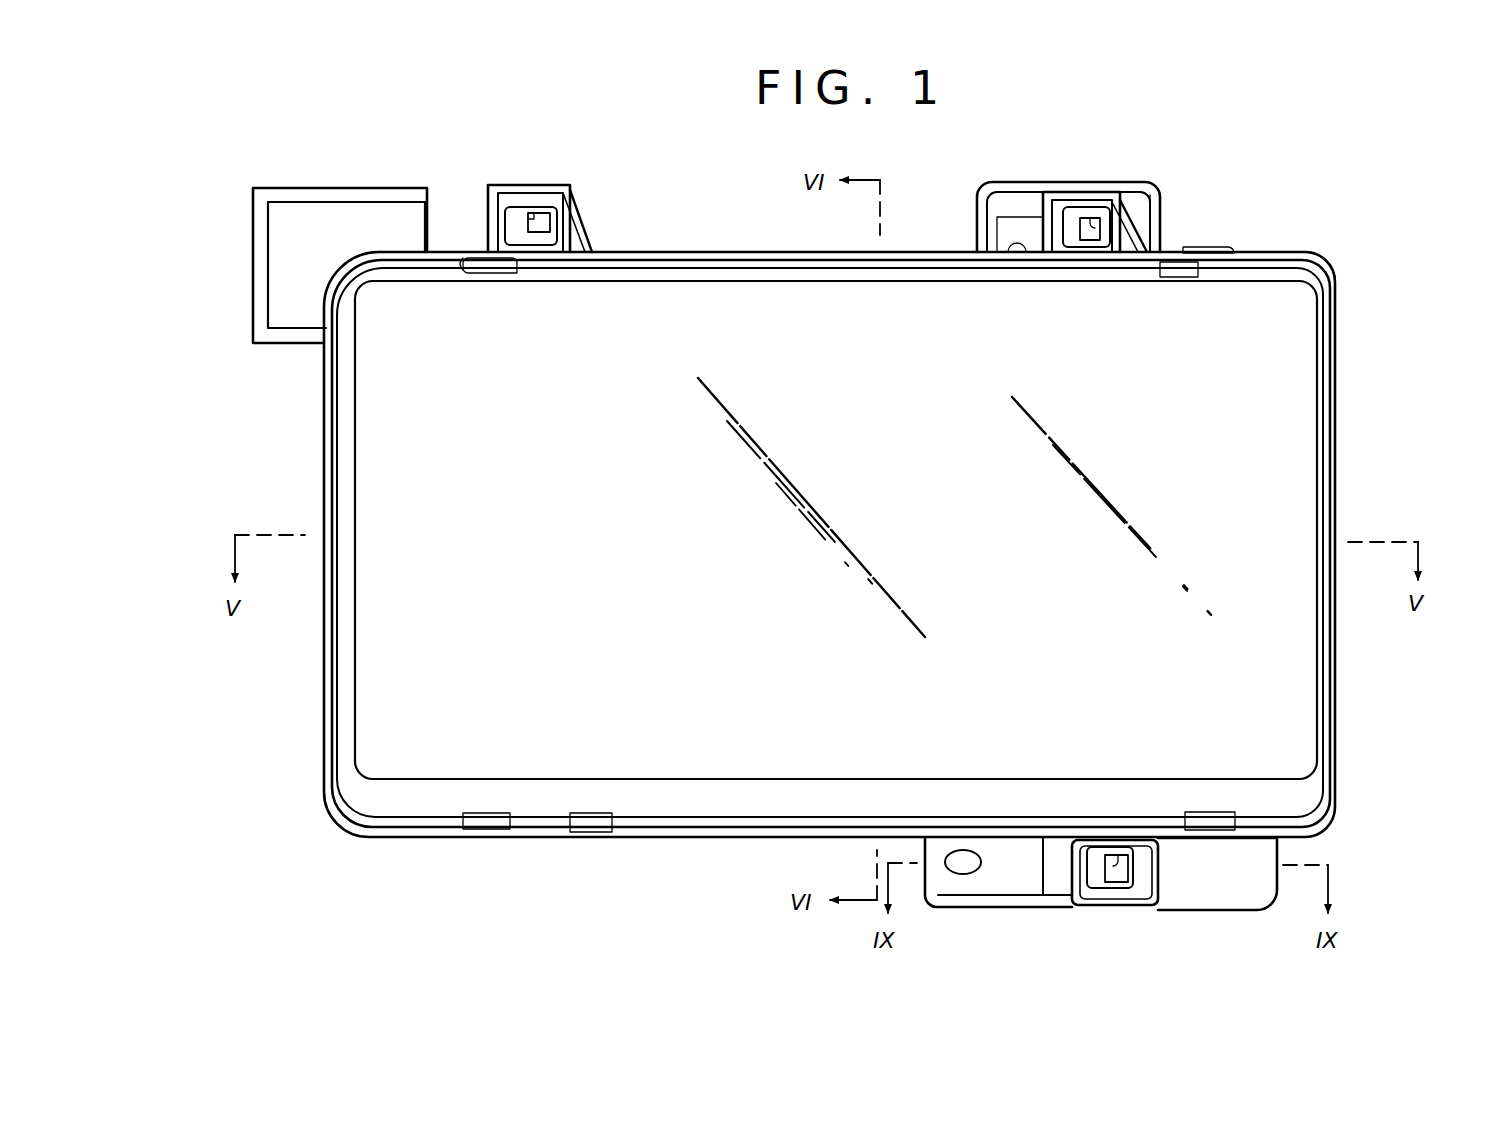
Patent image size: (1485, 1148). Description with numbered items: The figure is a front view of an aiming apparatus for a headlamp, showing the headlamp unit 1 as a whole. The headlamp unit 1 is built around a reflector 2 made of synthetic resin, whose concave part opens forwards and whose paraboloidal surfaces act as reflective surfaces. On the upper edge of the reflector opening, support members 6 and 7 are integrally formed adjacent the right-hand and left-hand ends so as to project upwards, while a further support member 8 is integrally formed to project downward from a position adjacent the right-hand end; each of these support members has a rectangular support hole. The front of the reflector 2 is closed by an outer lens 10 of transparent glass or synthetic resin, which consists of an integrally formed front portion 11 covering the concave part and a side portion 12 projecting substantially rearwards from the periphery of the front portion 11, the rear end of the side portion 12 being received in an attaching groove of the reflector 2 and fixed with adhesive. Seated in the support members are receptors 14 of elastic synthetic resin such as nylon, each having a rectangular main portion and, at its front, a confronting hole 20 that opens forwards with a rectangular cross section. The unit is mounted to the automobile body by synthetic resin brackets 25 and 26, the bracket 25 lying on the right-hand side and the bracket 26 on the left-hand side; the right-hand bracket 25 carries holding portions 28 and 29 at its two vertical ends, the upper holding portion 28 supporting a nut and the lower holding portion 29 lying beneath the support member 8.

The headlamp unit 1 is at (840, 516).
The reflector 2 is at (1295, 254).
The support member 6 is at (1103, 207).
The support member 7 is at (503, 185).
The support member 8 is at (1127, 903).
The outer lens 10 is at (1290, 460).
The front portion 11 is at (538, 740).
The side portion 12 is at (370, 697).
The receptor 14 is at (537, 207).
The confronting hole 20 is at (528, 222).
The bracket 25 is at (980, 193).
The bracket 26 is at (295, 220).
The holding portion 28 is at (1138, 182).
The holding portion 29 is at (1200, 893).